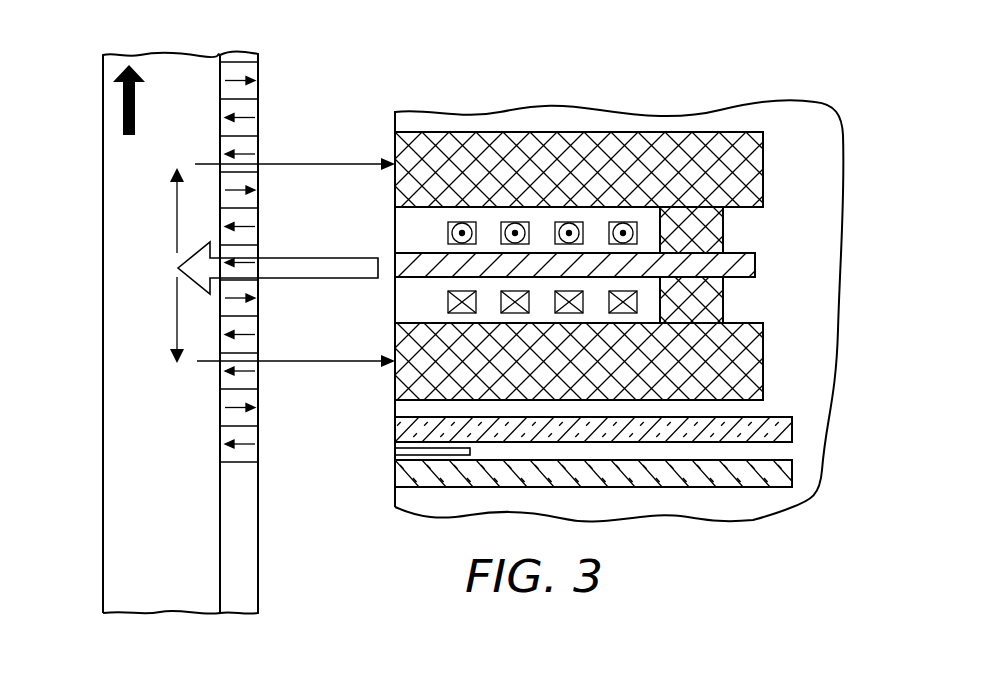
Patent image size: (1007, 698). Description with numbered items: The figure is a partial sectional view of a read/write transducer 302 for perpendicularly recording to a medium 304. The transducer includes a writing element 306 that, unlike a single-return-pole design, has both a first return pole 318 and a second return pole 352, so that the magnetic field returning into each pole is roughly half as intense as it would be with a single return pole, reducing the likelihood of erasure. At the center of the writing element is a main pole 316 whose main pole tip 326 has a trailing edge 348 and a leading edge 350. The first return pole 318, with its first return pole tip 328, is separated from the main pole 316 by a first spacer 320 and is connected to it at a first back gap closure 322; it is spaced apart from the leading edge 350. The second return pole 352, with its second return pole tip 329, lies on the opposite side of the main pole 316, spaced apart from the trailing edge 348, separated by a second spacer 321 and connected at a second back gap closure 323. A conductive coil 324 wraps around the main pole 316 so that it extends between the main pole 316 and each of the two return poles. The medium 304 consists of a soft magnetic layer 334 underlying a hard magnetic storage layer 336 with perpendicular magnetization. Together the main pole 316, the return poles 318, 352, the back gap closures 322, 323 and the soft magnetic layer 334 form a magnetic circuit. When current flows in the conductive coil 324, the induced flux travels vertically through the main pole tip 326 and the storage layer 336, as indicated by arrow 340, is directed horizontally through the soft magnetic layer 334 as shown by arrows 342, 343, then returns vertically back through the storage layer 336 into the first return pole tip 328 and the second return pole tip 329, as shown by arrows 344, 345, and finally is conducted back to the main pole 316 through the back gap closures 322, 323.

The read/write transducer 302 is at (766, 56).
The medium 304 is at (83, 77).
The writing element 306 is at (801, 182).
The main pole 316 is at (755, 262).
The first return pole 318 is at (728, 383).
The first spacer 320 is at (402, 318).
The second spacer 321 is at (402, 232).
The first back gap closure 322 is at (698, 308).
The second back gap closure 323 is at (705, 222).
The conductive coil 324 is at (515, 223).
The main pole tip 326 is at (402, 280).
The first return pole tip 328 is at (395, 372).
The second return pole tip 329 is at (392, 172).
The soft magnetic layer 334 is at (160, 590).
The storage layer 336 is at (237, 590).
The arrow 340 is at (291, 279).
The arrow 342 is at (176, 216).
The arrow 343 is at (176, 322).
The arrow 344 is at (281, 364).
The arrow 345 is at (308, 163).
The trailing edge 348 is at (402, 262).
The leading edge 350 is at (402, 297).
The second return pole 352 is at (717, 163).